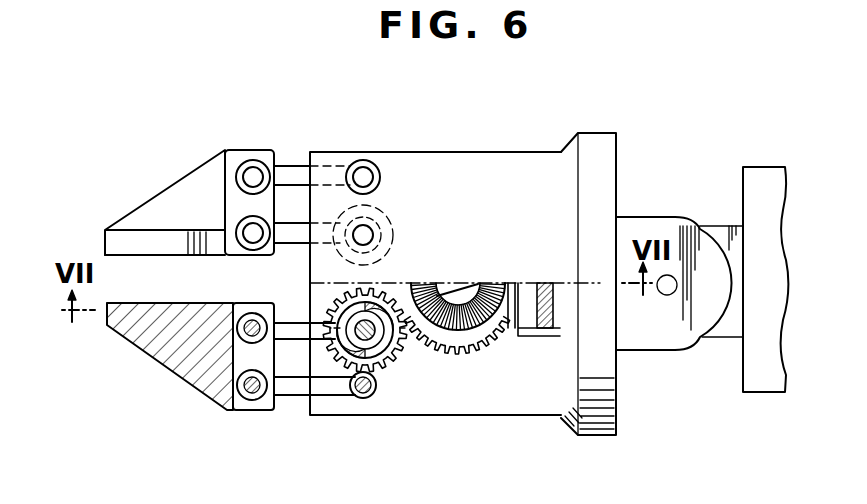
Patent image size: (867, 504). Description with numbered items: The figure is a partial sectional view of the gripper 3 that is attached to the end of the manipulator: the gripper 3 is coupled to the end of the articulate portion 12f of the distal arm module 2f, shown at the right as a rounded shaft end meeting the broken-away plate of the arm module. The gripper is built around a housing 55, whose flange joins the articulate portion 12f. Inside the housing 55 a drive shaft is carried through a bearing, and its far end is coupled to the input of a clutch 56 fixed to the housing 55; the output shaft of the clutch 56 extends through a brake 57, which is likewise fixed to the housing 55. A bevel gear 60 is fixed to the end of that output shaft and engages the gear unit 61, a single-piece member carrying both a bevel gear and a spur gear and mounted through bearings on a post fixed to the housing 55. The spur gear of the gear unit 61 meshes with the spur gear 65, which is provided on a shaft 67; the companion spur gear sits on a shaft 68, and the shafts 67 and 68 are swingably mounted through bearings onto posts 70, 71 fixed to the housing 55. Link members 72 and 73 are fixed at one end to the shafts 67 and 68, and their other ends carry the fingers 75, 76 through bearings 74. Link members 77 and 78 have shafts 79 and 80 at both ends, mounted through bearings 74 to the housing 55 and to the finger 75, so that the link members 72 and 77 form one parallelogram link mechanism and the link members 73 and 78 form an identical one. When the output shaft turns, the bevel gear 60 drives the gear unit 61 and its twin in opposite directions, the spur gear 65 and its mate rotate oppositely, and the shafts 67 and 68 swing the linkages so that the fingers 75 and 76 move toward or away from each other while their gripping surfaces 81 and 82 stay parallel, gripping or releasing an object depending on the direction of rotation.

The gripper 3 is at (541, 150).
The distal arm module 2f is at (758, 167).
The articulate portion 12f is at (673, 332).
The housing 55 is at (466, 150).
The clutch 56 is at (553, 290).
The brake 57 is at (532, 338).
The bevel gear 60 is at (492, 322).
The gear unit 61 is at (462, 340).
The spur gear 65 is at (392, 350).
The shaft 67 is at (383, 352).
The shaft 68 is at (382, 236).
The post 70 is at (380, 362).
The post 71 is at (372, 232).
The link member 72 is at (290, 325).
The link member 73 is at (292, 240).
The bearing 74 is at (243, 168).
The finger 75 is at (187, 367).
The finger 76 is at (152, 218).
The link member 77 is at (292, 398).
The link member 78 is at (298, 177).
The shaft 79 is at (372, 162).
The shaft 80 is at (255, 175).
The gripping surface 81 is at (131, 303).
The gripping surface 82 is at (165, 257).